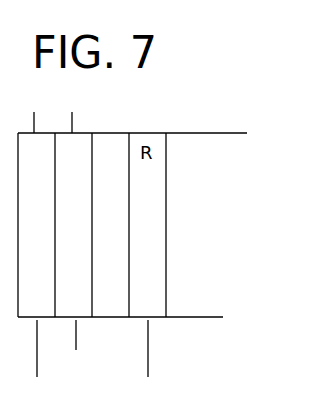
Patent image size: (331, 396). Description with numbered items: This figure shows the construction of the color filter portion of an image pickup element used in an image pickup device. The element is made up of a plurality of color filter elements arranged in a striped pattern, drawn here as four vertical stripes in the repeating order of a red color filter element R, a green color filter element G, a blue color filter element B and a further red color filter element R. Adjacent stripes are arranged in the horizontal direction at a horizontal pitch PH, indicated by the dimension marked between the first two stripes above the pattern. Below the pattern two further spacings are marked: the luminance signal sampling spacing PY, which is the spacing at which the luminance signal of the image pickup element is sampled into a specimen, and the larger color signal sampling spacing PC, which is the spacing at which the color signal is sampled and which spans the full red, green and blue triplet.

The horizontal pitch PH is at (72, 114).
The luminance signal sampling spacing PY is at (76, 347).
The color signal sampling spacing PC is at (148, 373).
The red color filter element R is at (36, 225).
The green color filter element G is at (79, 225).
The blue color filter element B is at (116, 225).